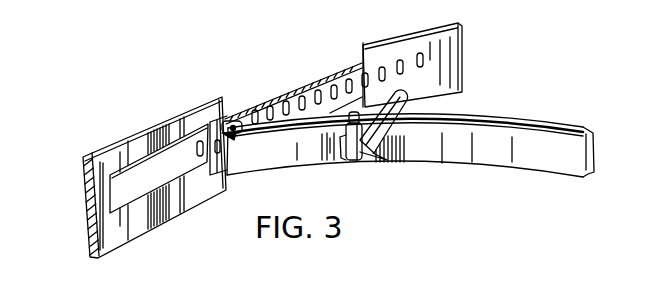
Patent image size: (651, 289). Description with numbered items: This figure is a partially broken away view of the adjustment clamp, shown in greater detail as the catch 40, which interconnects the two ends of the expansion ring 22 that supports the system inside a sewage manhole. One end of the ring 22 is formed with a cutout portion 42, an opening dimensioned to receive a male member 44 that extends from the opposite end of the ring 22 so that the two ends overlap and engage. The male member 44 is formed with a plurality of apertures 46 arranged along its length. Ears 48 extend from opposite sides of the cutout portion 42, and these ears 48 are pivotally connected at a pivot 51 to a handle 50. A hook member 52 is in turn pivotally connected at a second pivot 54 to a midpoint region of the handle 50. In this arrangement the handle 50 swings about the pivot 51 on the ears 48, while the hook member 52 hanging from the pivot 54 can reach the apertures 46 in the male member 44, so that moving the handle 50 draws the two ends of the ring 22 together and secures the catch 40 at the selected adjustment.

The expansion ring 22 is at (97, 162).
The catch 40 is at (279, 73).
The cutout portion 42 is at (128, 172).
The male member 44 is at (259, 110).
The apertures 46 is at (352, 70).
The ears 48 is at (220, 173).
The handle 50 is at (517, 160).
The pivot 51 is at (248, 130).
The hook member 52 is at (388, 118).
The pivot 54 is at (362, 160).